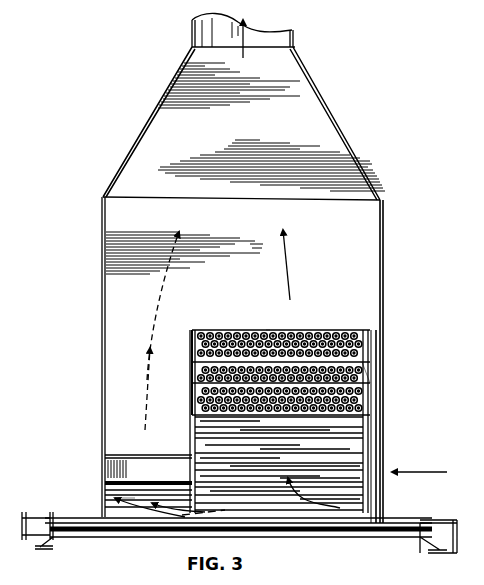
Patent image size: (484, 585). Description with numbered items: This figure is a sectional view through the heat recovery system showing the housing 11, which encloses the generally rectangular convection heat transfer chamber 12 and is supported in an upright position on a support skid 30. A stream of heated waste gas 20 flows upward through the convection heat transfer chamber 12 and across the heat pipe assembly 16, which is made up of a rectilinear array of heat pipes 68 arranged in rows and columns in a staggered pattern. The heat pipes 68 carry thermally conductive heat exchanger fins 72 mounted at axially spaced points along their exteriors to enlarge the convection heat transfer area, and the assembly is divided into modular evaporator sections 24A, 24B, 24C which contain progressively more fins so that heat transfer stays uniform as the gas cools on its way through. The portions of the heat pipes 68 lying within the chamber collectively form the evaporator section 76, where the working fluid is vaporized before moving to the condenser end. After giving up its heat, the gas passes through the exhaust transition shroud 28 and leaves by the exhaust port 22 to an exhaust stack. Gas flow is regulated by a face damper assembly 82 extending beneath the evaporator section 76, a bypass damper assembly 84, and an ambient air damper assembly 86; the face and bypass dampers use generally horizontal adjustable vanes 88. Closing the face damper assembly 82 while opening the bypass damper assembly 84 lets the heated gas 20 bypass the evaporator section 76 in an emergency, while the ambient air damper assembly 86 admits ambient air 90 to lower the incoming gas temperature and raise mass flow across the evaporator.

The housing 11 is at (366, 231).
The convection heat transfer chamber 12 is at (103, 232).
The heat pipe assembly 16 is at (325, 326).
The heated waste gas stream 20 is at (242, 55).
The exhaust port 22 is at (296, 34).
The evaporator section 24A is at (192, 400).
The evaporator section 24B is at (192, 368).
The evaporator section 24C is at (193, 345).
The exhaust transition shroud 28 is at (343, 133).
The support skid 30 is at (45, 512).
The heat pipes 68 is at (251, 336).
The heat exchanger fins 72 is at (268, 330).
The evaporator section 76 is at (362, 372).
The face damper assembly 82 is at (350, 458).
The bypass damper assembly 84 is at (148, 481).
The ambient air damper assembly 86 is at (380, 430).
The adjustable vanes 88 is at (133, 488).
The ambient air flow 90 is at (421, 472).